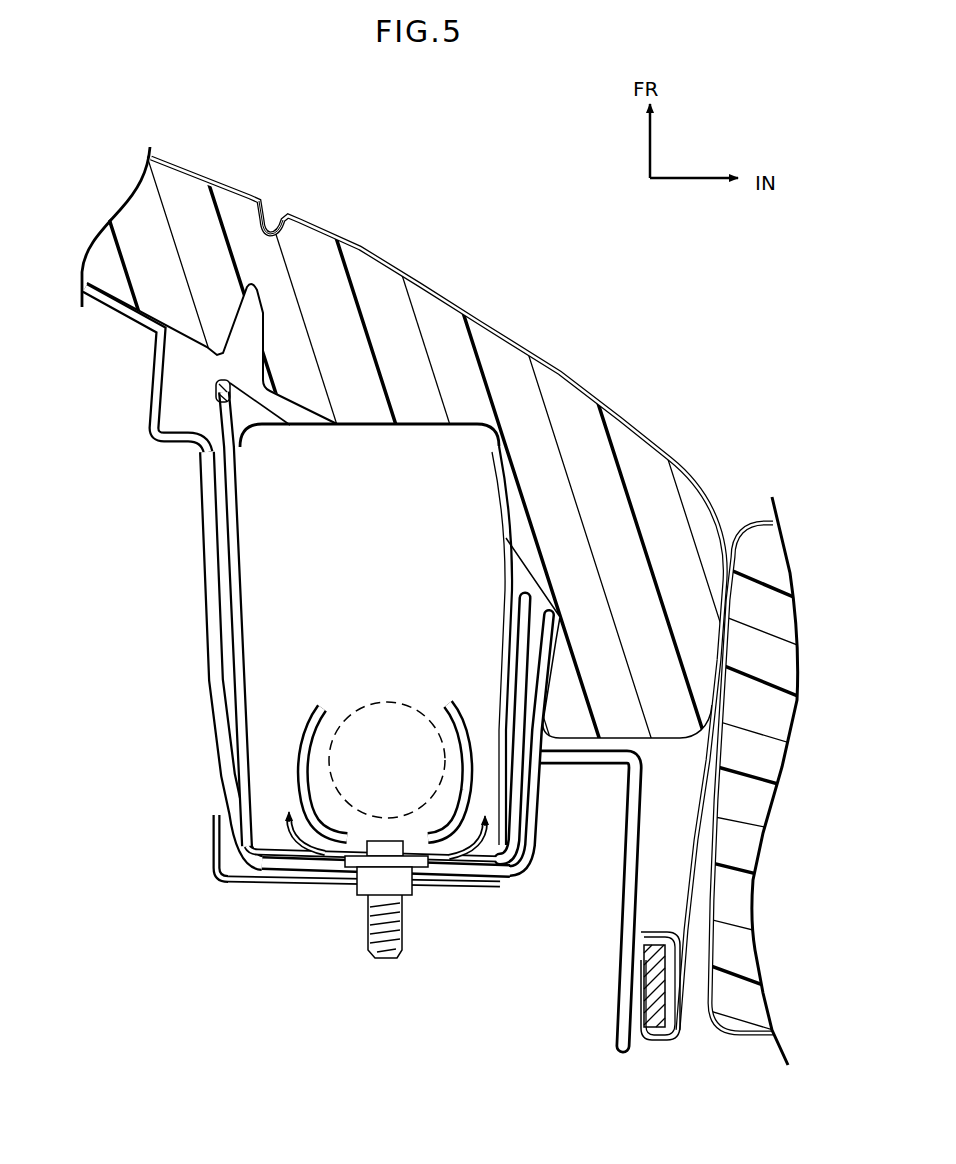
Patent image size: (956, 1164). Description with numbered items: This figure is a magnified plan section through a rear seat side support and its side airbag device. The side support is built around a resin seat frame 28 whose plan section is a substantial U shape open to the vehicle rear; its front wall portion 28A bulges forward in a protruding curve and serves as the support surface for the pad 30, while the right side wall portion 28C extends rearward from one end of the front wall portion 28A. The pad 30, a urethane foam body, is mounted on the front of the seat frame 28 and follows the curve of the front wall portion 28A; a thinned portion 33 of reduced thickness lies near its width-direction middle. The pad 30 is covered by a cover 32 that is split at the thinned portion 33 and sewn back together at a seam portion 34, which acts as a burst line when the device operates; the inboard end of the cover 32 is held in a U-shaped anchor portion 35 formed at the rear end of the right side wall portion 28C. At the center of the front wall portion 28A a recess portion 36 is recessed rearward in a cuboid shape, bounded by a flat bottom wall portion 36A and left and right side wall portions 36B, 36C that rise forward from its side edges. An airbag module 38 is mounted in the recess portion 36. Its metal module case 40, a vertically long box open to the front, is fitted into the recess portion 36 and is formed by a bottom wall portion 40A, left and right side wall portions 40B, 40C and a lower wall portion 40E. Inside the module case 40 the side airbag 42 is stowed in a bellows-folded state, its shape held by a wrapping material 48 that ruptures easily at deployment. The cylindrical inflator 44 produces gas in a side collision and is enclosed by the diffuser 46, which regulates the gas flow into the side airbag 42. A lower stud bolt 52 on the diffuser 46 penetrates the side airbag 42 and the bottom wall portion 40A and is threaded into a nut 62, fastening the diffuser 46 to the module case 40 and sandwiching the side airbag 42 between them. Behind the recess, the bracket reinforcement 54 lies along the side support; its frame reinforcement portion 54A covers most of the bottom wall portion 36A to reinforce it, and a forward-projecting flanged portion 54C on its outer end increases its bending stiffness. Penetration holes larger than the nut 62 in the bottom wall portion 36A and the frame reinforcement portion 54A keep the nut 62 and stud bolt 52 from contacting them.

The seat frame 28 is at (341, 667).
The front wall portion 28A is at (130, 318).
The right side wall portion 28C is at (622, 897).
The pad 30 is at (424, 450).
The cover 32 is at (438, 578).
The thinned portion 33 is at (268, 257).
The seam portion 34 is at (274, 223).
The anchor portion 35 is at (667, 1028).
The recess portion 36 is at (369, 709).
The bottom wall portion 36A is at (307, 867).
The left side wall portion 36B is at (216, 633).
The right side wall portion 36C is at (535, 808).
The airbag module 38 is at (201, 381).
The module case 40 is at (371, 540).
The bottom wall portion 40A is at (487, 872).
The left side wall portion 40B is at (232, 667).
The right side wall portion 40C is at (541, 773).
The lower wall portion 40E is at (252, 413).
The side airbag 42 is at (287, 847).
The inflator 44 is at (372, 700).
The diffuser 46 is at (317, 707).
The wrapping material 48 is at (450, 424).
The stud bolt 52 is at (383, 945).
The bracket reinforcement 54 is at (320, 908).
The frame reinforcement portion 54A is at (261, 883).
The flanged portion 54C is at (215, 840).
The nut 62 is at (410, 887).